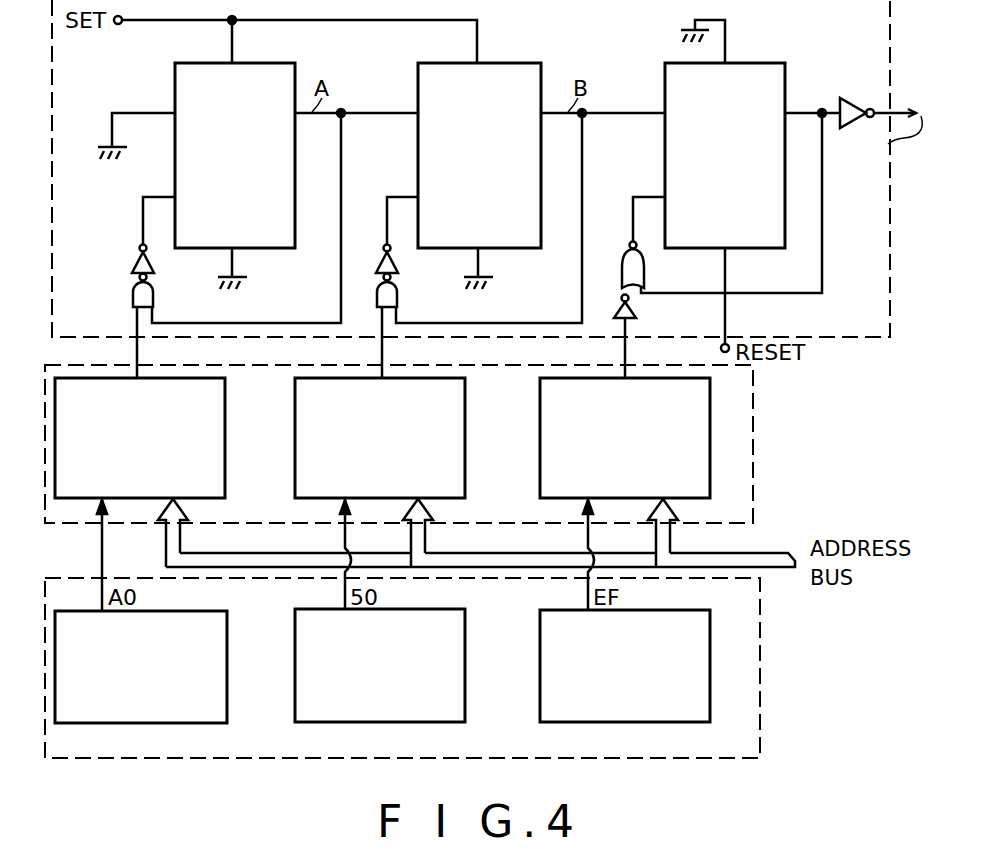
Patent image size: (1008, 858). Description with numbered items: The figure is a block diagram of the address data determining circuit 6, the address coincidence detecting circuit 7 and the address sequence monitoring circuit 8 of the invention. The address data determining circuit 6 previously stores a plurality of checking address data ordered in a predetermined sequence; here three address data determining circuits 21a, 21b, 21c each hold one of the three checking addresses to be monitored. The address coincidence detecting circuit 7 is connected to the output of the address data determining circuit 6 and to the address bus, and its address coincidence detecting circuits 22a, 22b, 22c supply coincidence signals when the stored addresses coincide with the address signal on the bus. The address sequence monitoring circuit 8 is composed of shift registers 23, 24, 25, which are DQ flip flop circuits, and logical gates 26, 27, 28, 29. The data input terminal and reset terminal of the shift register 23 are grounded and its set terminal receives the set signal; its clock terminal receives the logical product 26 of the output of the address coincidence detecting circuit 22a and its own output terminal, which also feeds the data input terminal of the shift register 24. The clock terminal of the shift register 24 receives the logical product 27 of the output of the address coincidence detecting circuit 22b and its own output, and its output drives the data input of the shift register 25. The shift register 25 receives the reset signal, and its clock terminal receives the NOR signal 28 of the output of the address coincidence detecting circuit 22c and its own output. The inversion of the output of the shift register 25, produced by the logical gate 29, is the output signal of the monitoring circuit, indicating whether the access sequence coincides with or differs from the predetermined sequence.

The address data determining circuit 6 is at (760, 742).
The address coincidence detecting circuit 7 is at (753, 483).
The address sequence monitoring circuit 8 is at (862, 338).
The address data determining circuit 21a is at (227, 646).
The address data determining circuit 21b is at (465, 646).
The address data determining circuit 21c is at (710, 646).
The address coincidence detecting circuit 22a is at (225, 431).
The address coincidence detecting circuit 22b is at (465, 431).
The address coincidence detecting circuit 22c is at (710, 431).
The shift register 23 is at (288, 63).
The shift register 24 is at (531, 63).
The shift register 25 is at (765, 63).
The logical product 26 is at (128, 292).
The logical product 27 is at (371, 275).
The NOR signal 28 is at (614, 285).
The logical gate 29 is at (866, 106).